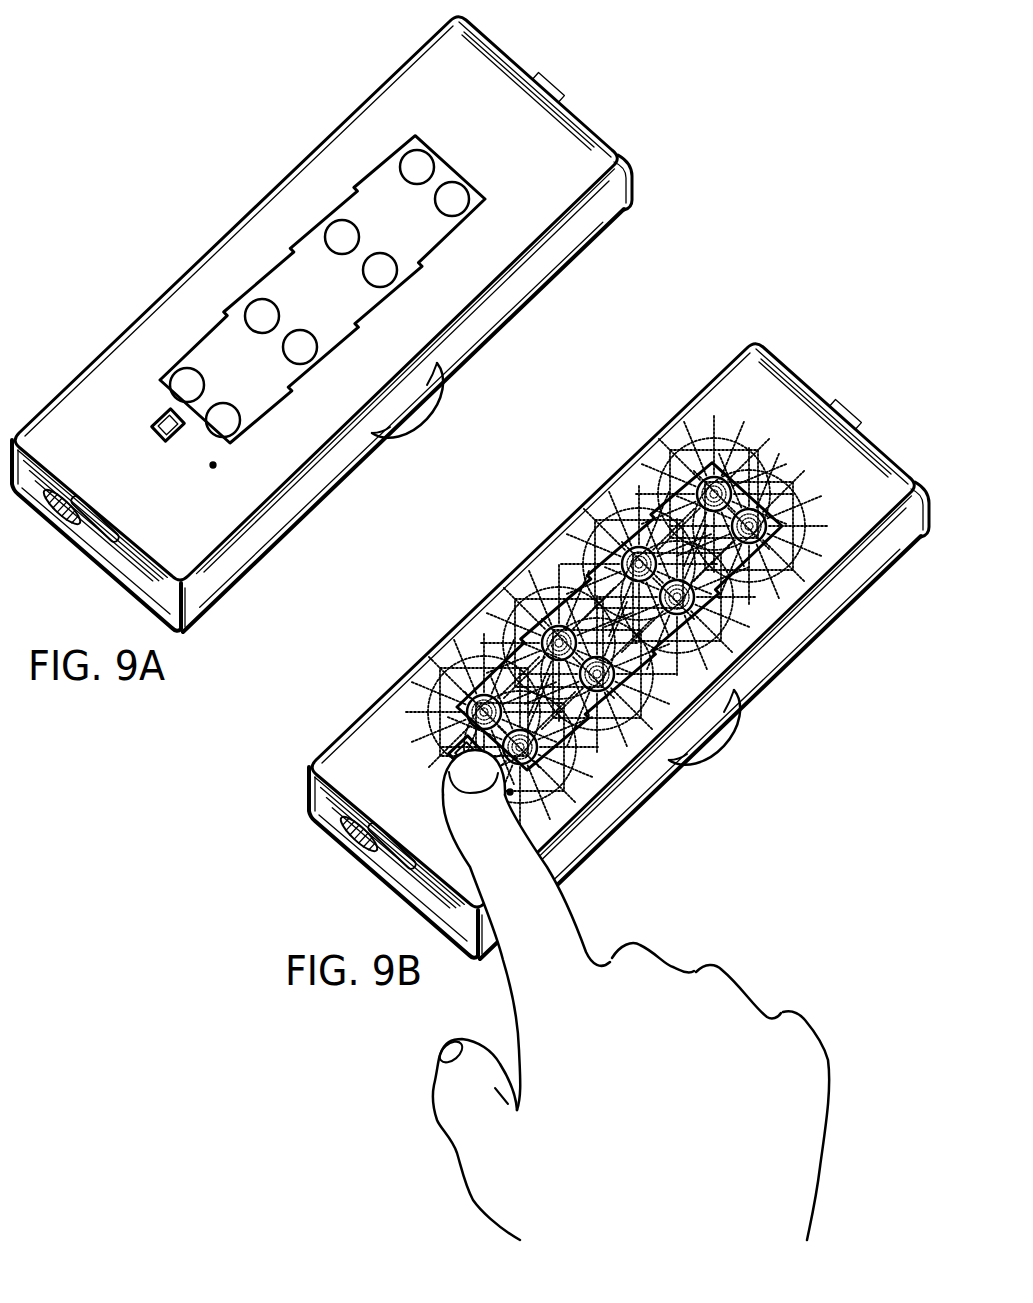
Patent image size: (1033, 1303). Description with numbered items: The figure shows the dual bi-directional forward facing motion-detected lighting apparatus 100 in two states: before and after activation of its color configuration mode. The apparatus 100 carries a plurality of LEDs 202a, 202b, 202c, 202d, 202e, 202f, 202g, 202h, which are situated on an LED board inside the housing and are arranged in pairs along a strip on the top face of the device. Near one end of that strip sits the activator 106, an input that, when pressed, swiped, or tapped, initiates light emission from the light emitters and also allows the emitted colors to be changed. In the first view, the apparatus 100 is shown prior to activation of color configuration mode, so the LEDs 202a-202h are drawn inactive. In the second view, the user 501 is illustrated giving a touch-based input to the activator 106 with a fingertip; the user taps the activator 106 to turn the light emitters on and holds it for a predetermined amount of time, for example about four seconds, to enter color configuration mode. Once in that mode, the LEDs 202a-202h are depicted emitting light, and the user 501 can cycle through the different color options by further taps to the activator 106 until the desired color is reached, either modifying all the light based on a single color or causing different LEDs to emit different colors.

In FIG. 9A, the dual bi-directional forward facing motion-detected lighting apparatus 100 is at (284, 136).
In FIG. 9B, the dual bi-directional forward facing motion-detected lighting apparatus 100 is at (809, 358).
In FIG. 9A, the activator 106 is at (176, 434).
In FIG. 9B, the activator 106 is at (458, 743).
In FIG. 9A, the LED 202a is at (182, 381).
In FIG. 9B, the LED 202a is at (475, 702).
In FIG. 9A, the LED 202b is at (232, 418).
In FIG. 9B, the LED 202b is at (522, 746).
In FIG. 9A, the LED 202c is at (257, 308).
In FIG. 9B, the LED 202c is at (548, 630).
In FIG. 9A, the LED 202d is at (303, 349).
In FIG. 9B, the LED 202d is at (600, 675).
In FIG. 9A, the LED 202e is at (333, 230).
In FIG. 9B, the LED 202e is at (632, 552).
In FIG. 9A, the LED 202f is at (383, 271).
In FIG. 9B, the LED 202f is at (680, 598).
In FIG. 9A, the LED 202g is at (410, 157).
In FIG. 9B, the LED 202g is at (708, 485).
In FIG. 9A, the LED 202h is at (453, 200).
In FIG. 9B, the LED 202h is at (752, 527).
In FIG. 9B, the user 501 is at (457, 1172).